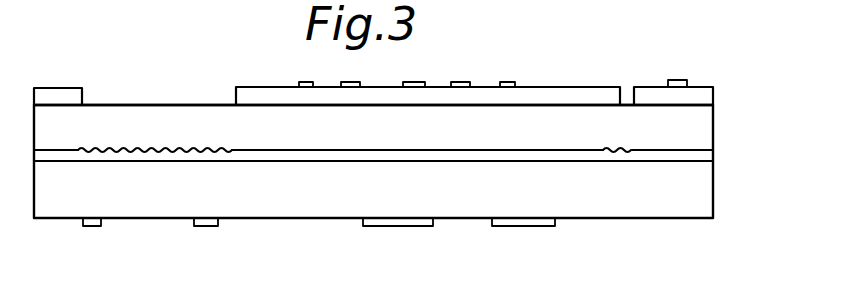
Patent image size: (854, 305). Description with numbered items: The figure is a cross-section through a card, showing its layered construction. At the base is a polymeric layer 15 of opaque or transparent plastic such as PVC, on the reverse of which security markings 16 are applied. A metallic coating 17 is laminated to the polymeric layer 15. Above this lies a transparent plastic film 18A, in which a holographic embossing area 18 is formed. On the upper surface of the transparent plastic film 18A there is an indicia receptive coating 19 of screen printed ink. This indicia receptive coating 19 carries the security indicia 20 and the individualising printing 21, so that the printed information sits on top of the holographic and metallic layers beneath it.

The polymeric layer 15 is at (663, 190).
The security markings 16 is at (545, 226).
The metallic coating 17 is at (697, 153).
The holographic embossing area 18 is at (197, 148).
The transparent plastic film 18A is at (696, 120).
The indicia receptive coating 19 is at (80, 93).
The security indicia 20 is at (420, 82).
The individualising printing 21 is at (680, 78).